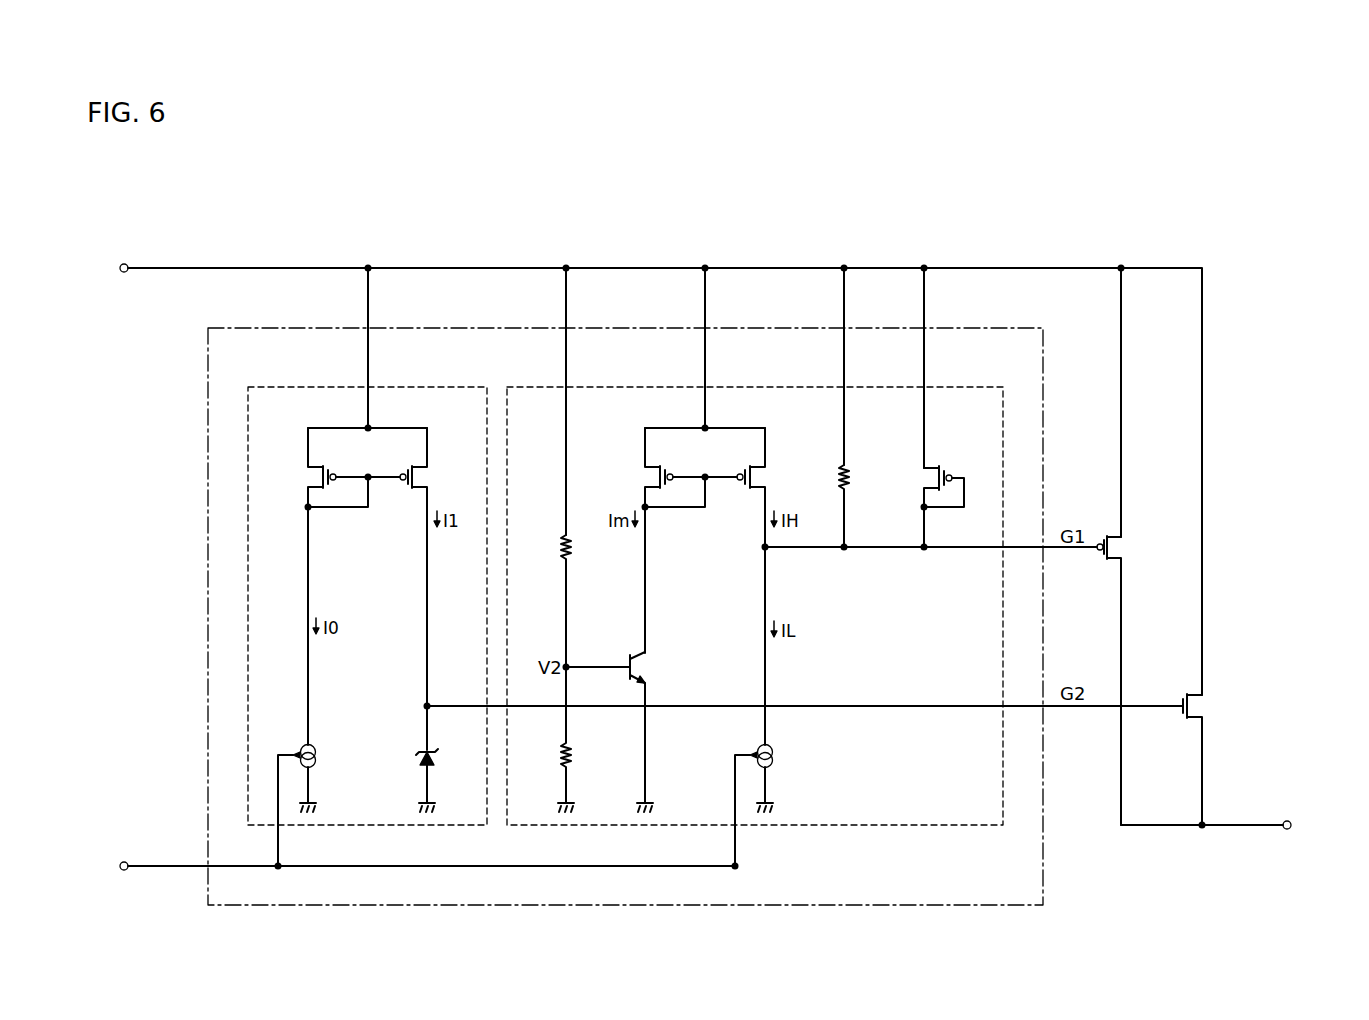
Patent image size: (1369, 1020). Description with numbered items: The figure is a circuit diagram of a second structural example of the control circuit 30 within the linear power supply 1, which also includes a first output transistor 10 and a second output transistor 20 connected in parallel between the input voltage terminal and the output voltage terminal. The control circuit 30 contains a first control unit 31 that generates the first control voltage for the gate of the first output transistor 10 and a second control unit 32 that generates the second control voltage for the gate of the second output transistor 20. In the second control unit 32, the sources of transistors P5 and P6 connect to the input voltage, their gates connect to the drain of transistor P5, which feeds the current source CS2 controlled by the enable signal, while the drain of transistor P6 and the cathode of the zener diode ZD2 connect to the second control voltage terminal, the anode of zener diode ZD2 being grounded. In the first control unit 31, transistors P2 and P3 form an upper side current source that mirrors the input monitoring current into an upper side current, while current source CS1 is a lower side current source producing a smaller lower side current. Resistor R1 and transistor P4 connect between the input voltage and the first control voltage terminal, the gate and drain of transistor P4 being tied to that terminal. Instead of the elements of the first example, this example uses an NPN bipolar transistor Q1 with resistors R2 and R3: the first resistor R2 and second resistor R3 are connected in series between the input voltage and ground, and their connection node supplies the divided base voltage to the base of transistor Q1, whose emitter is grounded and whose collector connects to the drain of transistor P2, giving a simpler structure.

The linear power supply 1 is at (1240, 228).
The first output transistor 10 is at (1129, 680).
The second output transistor 20 is at (1212, 759).
The control circuit 30 is at (627, 327).
The first control unit 31 is at (767, 387).
The second control unit 32 is at (429, 387).
The P-channel MOS field-effect transistor P2 is at (657, 540).
The P-channel MOS field-effect transistor P3 is at (754, 586).
The P-channel MOS field-effect transistor P4 is at (953, 476).
The P-channel MOS field-effect transistor P5 is at (320, 586).
The P-channel MOS field-effect transistor P6 is at (433, 476).
The resistor R1 is at (866, 506).
The first resistor R2 is at (588, 601).
The second resistor R3 is at (587, 739).
The NPN bipolar transistor Q1 is at (626, 732).
The current source CS1 is at (791, 779).
The current source CS2 is at (334, 779).
The zener diode ZD2 is at (453, 778).